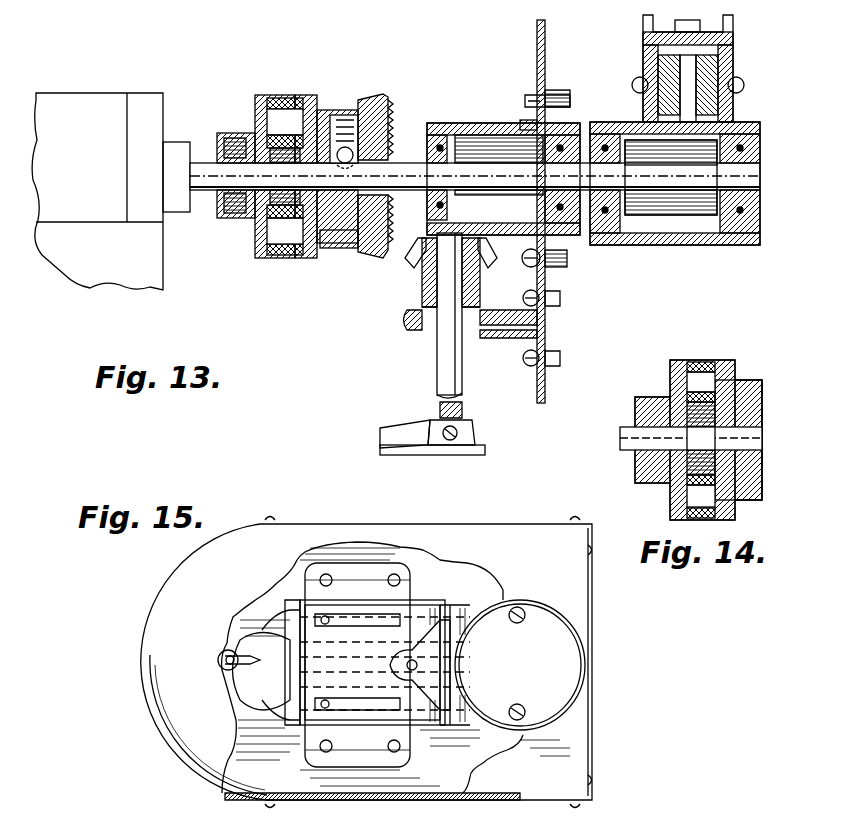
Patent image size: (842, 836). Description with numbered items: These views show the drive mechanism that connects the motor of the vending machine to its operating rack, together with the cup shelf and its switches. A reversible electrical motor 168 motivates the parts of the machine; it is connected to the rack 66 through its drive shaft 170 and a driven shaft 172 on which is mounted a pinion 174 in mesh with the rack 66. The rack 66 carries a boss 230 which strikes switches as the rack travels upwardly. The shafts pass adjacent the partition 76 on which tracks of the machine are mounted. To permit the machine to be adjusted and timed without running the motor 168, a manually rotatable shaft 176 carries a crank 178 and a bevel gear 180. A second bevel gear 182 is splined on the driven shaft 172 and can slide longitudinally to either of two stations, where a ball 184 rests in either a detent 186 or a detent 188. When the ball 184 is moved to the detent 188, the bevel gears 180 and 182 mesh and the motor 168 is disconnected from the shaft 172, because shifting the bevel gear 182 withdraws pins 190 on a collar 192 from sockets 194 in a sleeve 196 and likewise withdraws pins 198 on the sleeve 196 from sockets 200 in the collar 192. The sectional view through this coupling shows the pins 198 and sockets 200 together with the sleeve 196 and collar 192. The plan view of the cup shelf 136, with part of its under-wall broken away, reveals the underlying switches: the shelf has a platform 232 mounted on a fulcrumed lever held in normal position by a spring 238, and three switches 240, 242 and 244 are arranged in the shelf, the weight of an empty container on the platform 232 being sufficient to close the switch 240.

In FIG. 13, the electrical motor 168 is at (106, 105).
In FIG. 13, the drive shaft 170 is at (205, 163).
In FIG. 13, the driven shaft 172 is at (486, 178).
In FIG. 13, the pinion 174 is at (690, 210).
In FIG. 13, the manually rotatable shaft 176 is at (446, 355).
In FIG. 13, the crank 178 is at (392, 448).
In FIG. 13, the bevel gear 180 is at (420, 258).
In FIG. 13, the bevel gear 182 is at (380, 105).
In FIG. 13, the ball 184 is at (345, 118).
In FIG. 13, the detent 186 is at (340, 250).
In FIG. 13, the detent 188 is at (425, 150).
In FIG. 13, the pins 190 is at (288, 100).
In FIG. 13, the collar 192 is at (318, 100).
In FIG. 14, the collar 192 is at (748, 405).
In FIG. 13, the sockets 194 is at (272, 98).
In FIG. 13, the sleeve 196 is at (258, 108).
In FIG. 14, the sleeve 196 is at (680, 362).
In FIG. 14, the pins 198 is at (714, 372).
In FIG. 14, the sockets 200 is at (720, 372).
In FIG. 13, the boss 230 is at (722, 68).
In FIG. 13, the rack 66 is at (742, 122).
In FIG. 13, the partition 76 is at (546, 380).
In FIG. 15, the cup shelf 136 is at (366, 672).
In FIG. 15, the platform 232 is at (520, 665).
In FIG. 15, the spring 238 is at (226, 668).
In FIG. 15, the switch 240 is at (452, 655).
In FIG. 15, the switch 242 is at (300, 712).
In FIG. 15, the switch 244 is at (300, 600).